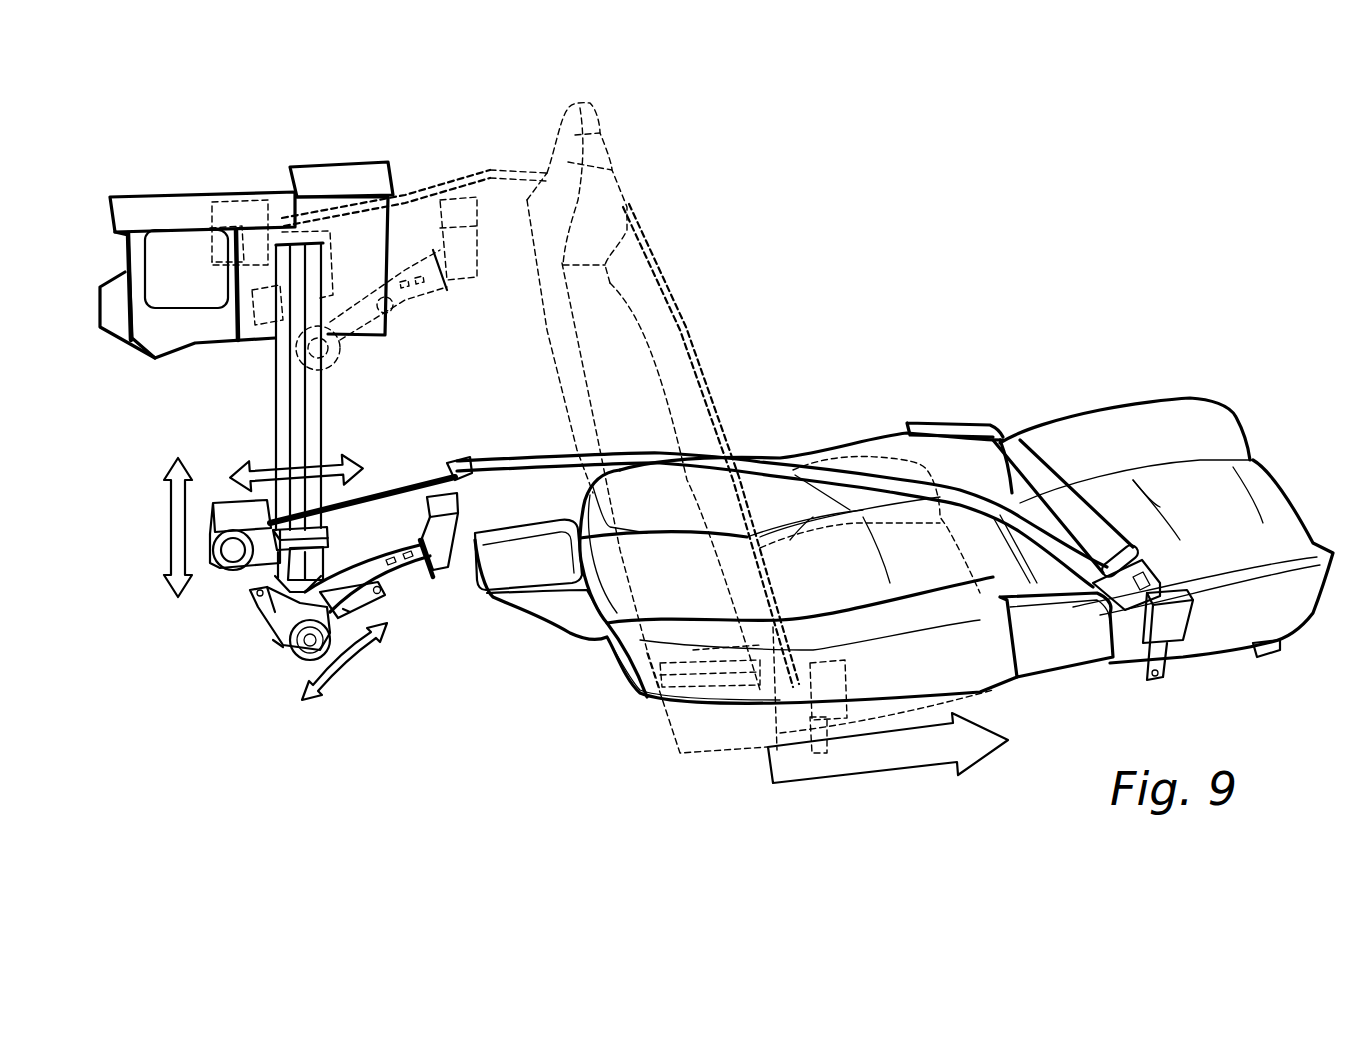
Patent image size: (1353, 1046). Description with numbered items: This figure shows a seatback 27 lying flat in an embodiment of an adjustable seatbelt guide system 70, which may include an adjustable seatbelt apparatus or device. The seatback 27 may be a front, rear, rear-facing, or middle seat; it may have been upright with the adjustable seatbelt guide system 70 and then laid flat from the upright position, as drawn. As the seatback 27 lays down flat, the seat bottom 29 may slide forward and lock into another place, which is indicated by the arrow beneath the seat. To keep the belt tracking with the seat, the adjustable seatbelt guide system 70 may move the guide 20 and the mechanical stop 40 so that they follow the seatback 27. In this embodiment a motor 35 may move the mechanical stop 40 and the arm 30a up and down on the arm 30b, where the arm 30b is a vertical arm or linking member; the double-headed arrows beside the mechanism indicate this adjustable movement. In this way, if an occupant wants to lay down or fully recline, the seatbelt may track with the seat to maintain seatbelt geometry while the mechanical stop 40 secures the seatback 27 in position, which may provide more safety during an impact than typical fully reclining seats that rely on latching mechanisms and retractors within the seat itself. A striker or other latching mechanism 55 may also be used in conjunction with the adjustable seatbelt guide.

The guide 20 is at (470, 477).
The seatback 27 is at (640, 670).
The seat bottom 29 is at (1158, 423).
The arm 30a is at (280, 642).
The arm 30b is at (277, 383).
The motor 35 is at (303, 643).
The mechanical stop 40 is at (453, 543).
The latching mechanism 55 is at (1267, 650).
The adjustable seatbelt guide system 70 is at (171, 660).